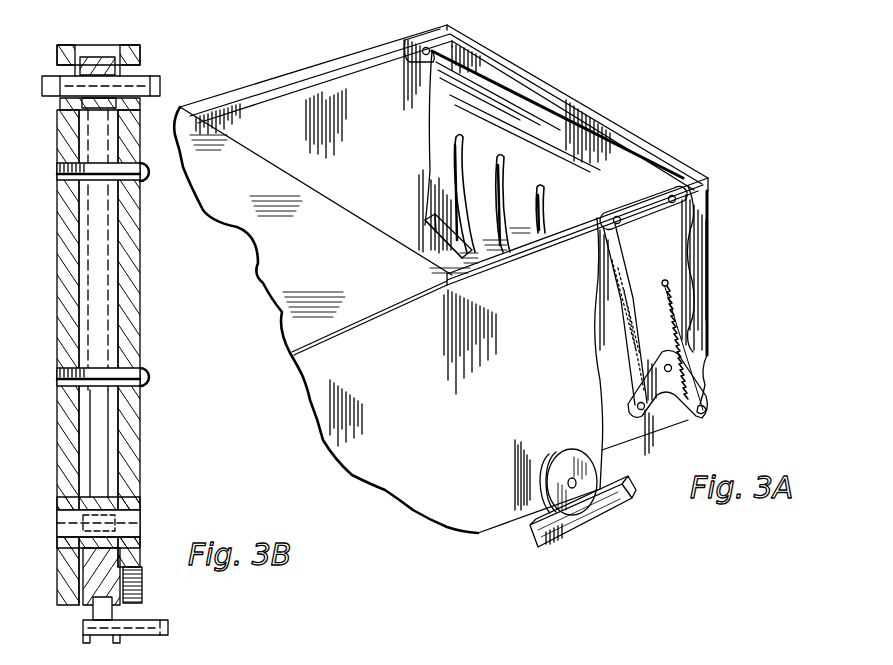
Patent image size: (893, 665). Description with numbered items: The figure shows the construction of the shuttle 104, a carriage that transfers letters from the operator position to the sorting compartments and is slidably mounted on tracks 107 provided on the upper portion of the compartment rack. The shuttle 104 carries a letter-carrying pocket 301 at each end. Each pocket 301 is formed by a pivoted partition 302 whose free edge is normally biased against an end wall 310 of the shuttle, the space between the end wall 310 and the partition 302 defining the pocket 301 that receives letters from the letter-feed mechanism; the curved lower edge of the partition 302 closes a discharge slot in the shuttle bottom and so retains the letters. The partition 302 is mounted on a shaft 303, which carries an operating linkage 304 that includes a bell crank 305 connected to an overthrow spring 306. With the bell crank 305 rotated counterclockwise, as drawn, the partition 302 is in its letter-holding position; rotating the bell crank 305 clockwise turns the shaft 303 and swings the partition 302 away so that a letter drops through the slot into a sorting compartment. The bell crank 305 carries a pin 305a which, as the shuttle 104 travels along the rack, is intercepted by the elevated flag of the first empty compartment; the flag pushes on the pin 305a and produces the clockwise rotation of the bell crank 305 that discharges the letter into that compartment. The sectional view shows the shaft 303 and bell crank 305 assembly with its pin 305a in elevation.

In FIG. 3A, the shuttle 104 is at (452, 536).
In FIG. 3A, the tracks 107 is at (620, 489).
In FIG. 3A, the letter-carrying pocket 301 is at (557, 100).
In FIG. 3A, the pivoted partition 302 is at (408, 44).
In FIG. 3B, the shaft 303 is at (152, 82).
In FIG. 3A, the shaft 303 is at (428, 46).
In FIG. 3A, the operating linkage 304 is at (640, 238).
In FIG. 3B, the bell crank 305 is at (125, 618).
In FIG. 3A, the bell crank 305 is at (695, 380).
In FIG. 3B, the pin 305a is at (155, 625).
In FIG. 3A, the pin 305a is at (713, 412).
In FIG. 3A, the overthrow spring 306 is at (712, 356).
In FIG. 3A, the end wall 310 is at (676, 168).